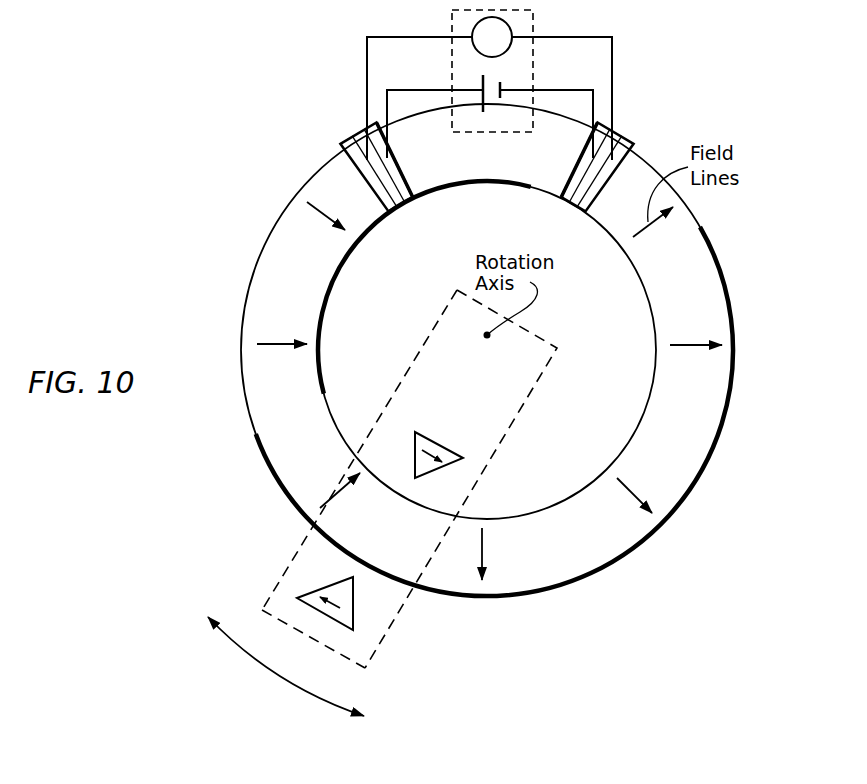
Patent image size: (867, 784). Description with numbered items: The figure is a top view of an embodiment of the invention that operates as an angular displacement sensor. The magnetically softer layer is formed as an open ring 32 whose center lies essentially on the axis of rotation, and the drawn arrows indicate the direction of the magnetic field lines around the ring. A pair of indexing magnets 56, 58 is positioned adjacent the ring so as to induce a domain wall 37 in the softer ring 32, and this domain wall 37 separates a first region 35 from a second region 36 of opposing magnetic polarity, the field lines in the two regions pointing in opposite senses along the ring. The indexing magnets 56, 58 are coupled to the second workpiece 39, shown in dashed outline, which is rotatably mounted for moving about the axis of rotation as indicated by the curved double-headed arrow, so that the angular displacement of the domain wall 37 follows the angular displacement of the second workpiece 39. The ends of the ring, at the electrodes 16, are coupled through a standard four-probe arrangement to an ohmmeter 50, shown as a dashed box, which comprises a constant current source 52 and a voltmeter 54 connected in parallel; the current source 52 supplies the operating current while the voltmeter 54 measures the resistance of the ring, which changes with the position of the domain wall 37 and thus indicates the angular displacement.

The electrode 16 is at (362, 158).
The softer magnetic layer 32 is at (703, 305).
The first region 35 is at (318, 431).
The second region 36 is at (564, 555).
The domain wall 37 is at (378, 558).
The second workpiece 39 is at (503, 438).
The ohmmeter 50 is at (512, 133).
The constant current source 52 is at (483, 77).
The voltmeter 54 is at (512, 25).
The indexing magnet 56 is at (414, 432).
The indexing magnet 58 is at (355, 608).